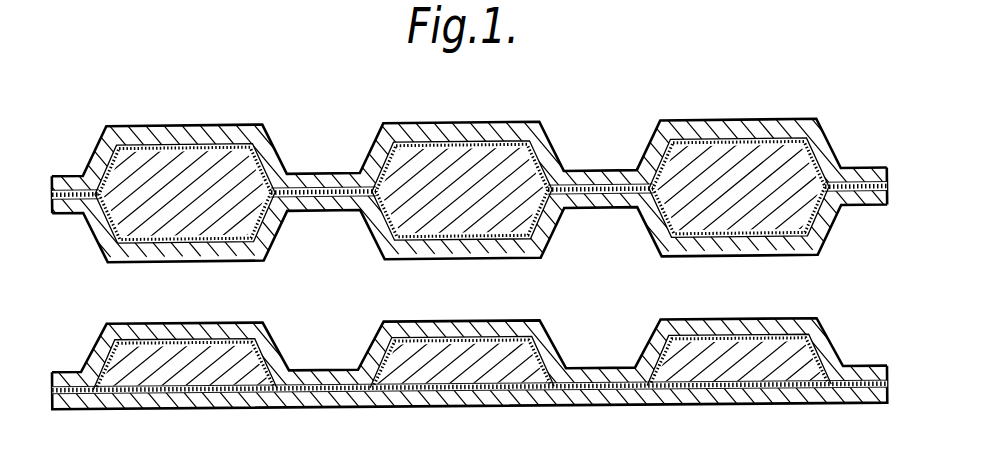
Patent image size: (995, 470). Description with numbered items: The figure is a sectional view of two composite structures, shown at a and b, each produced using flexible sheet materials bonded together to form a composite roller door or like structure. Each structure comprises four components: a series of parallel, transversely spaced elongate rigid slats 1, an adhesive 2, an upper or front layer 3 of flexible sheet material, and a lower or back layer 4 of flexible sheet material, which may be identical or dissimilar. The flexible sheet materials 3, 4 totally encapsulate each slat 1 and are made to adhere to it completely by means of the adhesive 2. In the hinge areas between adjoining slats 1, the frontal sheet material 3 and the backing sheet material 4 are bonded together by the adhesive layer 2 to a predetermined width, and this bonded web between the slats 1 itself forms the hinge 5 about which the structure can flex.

The rigid slat 1 is at (420, 152).
The adhesive 2 is at (388, 233).
The upper or front layer of flexible sheet material 3 is at (520, 140).
The lower or back layer of flexible sheet material 4 is at (526, 251).
The hinge 5 is at (611, 226).
The composite structure a is at (862, 142).
The composite structure b is at (866, 340).